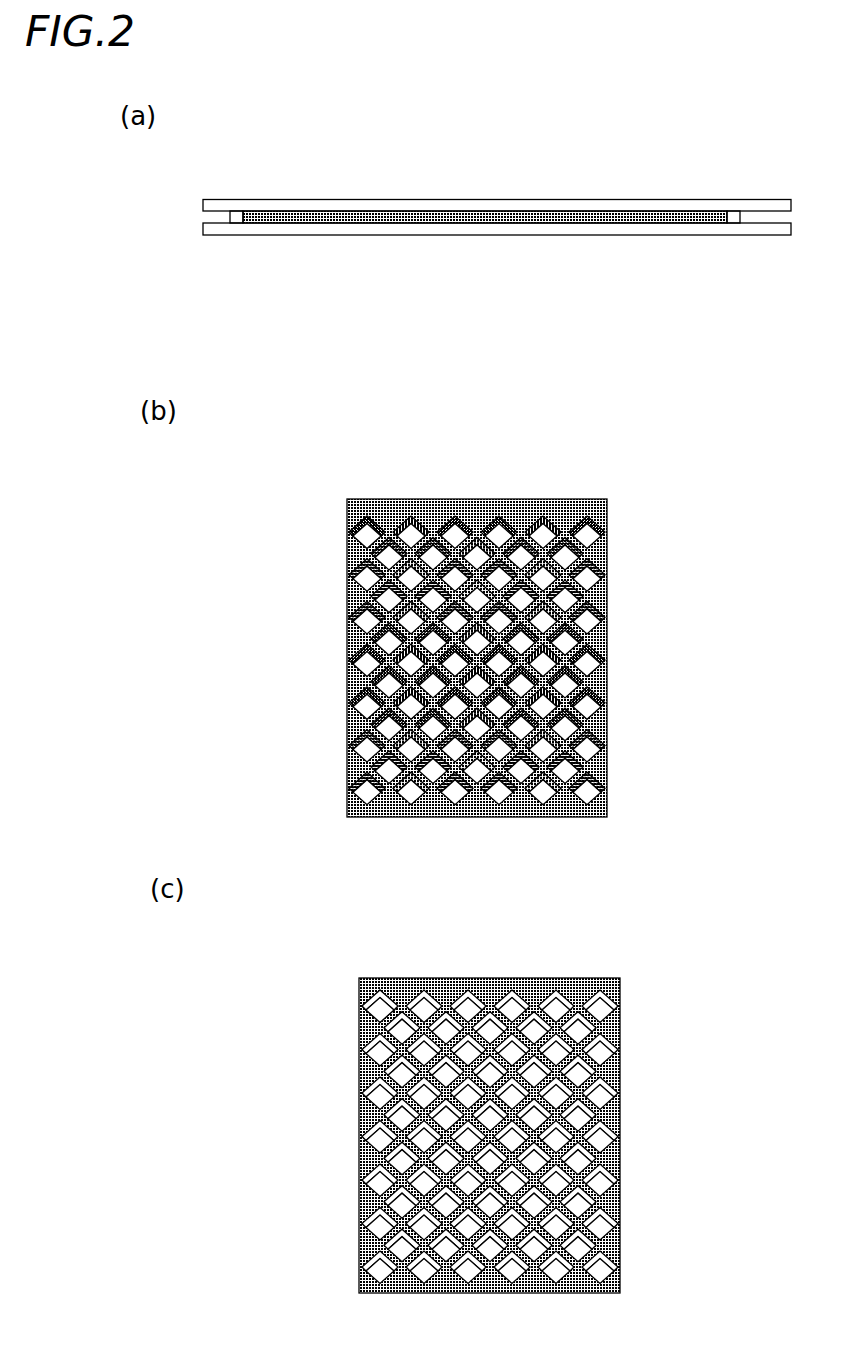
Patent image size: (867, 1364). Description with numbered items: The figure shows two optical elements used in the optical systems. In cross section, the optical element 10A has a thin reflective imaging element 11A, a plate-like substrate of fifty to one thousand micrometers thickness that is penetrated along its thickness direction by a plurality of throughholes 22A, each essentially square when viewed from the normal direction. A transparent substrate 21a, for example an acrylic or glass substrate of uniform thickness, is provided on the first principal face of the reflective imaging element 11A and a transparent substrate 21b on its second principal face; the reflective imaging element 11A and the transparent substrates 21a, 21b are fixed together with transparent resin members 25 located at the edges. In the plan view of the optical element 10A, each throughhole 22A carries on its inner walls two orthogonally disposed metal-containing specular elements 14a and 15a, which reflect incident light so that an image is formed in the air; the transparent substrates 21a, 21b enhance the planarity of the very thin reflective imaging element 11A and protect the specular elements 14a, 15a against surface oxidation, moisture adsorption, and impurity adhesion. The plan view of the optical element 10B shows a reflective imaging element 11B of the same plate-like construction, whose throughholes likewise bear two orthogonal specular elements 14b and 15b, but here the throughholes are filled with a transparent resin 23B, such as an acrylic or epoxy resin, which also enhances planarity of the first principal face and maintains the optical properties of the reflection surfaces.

The optical element 10A is at (740, 166).
The optical element 10B is at (692, 956).
The reflective imaging element 11A is at (365, 218).
The reflective imaging element 11B is at (474, 1094).
The specular element 14a is at (380, 526).
The specular element 14b is at (392, 1008).
The specular element 15a is at (378, 525).
The specular element 15b is at (390, 1005).
The transparent substrate 21a is at (482, 228).
The transparent substrate 21b is at (500, 207).
The throughhole 22A is at (606, 566).
The transparent resin 23B is at (619, 1042).
The resin member 25 is at (243, 212).